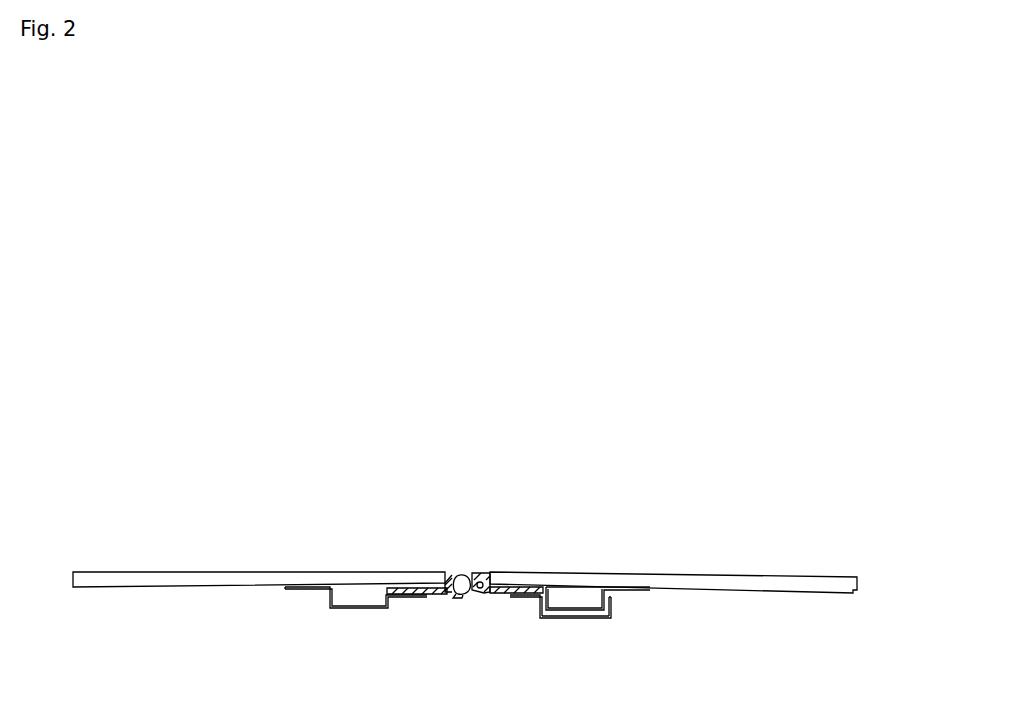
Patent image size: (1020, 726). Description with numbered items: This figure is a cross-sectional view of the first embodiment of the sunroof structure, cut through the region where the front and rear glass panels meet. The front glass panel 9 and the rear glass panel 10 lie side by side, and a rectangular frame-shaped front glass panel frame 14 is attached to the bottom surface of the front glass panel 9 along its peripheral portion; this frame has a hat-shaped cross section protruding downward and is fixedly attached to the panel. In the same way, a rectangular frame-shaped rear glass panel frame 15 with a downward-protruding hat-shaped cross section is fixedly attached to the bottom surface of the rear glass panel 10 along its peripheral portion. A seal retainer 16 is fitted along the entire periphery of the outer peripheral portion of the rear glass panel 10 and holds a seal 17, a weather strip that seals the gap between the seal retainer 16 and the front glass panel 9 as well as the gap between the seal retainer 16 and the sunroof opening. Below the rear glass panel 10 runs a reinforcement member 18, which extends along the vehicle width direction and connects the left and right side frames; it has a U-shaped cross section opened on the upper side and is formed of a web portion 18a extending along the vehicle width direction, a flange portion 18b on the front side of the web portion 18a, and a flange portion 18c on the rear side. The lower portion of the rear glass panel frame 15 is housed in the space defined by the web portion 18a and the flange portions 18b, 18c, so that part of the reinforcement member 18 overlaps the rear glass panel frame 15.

The front glass panel 9 is at (316, 572).
The rear glass panel 10 is at (705, 575).
The front glass panel frame 14 is at (353, 609).
The rear glass panel frame 15 is at (580, 607).
The seal retainer 16 is at (488, 573).
The seal 17 is at (462, 573).
The reinforcement member 18 is at (577, 650).
The web portion 18a is at (563, 620).
The flange portion 18b is at (539, 614).
The flange portion 18c is at (614, 614).